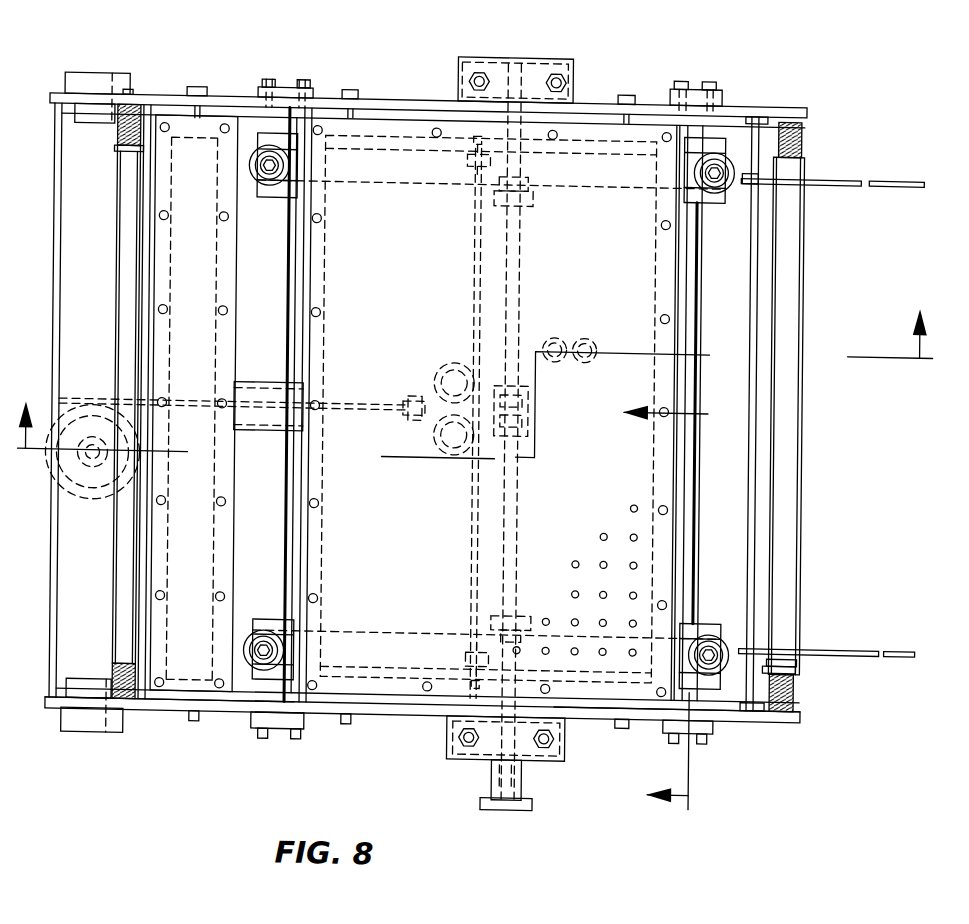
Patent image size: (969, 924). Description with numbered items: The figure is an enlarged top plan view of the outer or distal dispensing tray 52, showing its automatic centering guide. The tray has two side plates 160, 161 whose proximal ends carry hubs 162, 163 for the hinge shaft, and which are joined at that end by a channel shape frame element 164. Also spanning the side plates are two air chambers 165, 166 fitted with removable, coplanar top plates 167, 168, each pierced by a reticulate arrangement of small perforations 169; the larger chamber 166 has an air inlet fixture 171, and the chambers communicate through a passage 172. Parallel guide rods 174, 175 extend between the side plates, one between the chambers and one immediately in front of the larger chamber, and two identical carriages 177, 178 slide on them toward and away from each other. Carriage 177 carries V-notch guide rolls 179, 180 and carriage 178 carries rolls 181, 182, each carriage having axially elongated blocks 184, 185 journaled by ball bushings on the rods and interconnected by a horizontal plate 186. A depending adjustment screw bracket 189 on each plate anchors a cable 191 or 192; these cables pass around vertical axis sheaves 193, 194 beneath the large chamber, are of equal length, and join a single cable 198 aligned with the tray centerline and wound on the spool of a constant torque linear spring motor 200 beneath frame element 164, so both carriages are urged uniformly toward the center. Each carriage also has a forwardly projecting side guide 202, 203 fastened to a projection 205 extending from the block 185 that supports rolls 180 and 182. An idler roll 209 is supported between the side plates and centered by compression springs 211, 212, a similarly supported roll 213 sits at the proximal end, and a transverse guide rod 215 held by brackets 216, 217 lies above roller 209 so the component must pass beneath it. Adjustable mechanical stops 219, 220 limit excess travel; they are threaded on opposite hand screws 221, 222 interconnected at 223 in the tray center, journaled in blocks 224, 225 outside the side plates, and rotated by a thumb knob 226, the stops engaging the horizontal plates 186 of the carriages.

The distal dispensing tray 52 is at (610, 56).
The side plate 160 is at (401, 96).
The side plate 161 is at (398, 709).
The hub 162 is at (126, 72).
The hub 163 is at (101, 732).
The channel shape frame element 164 is at (63, 664).
The chamber 165 is at (221, 710).
The chamber 166 is at (598, 708).
The top plate 167 is at (211, 265).
The top plate 168 is at (663, 262).
The perforations 169 is at (582, 555).
The air inlet fixture 171 is at (579, 330).
The passage 172 is at (263, 427).
The guide rod 174 is at (283, 506).
The guide rod 175 is at (700, 553).
The carriage 177 is at (411, 177).
The carriage 178 is at (424, 625).
The V-notch guide roll 179 is at (250, 161).
The V-notch guide roll 180 is at (695, 163).
The V-notch guide roll 181 is at (249, 644).
The V-notch guide roll 182 is at (725, 618).
The guide block 184 is at (265, 193).
The guide block 185 is at (703, 143).
The horizontal plate 186 is at (359, 178).
The adjustment screw bracket 189 is at (466, 151).
The cable 191 is at (474, 278).
The cable 192 is at (475, 521).
The sheave 193 is at (448, 357).
The sheave 194 is at (443, 425).
The single cable 198 is at (366, 396).
The linear spring motor 200 is at (91, 402).
The side guide 202 is at (896, 164).
The side guide 203 is at (885, 641).
The projection 205 is at (744, 171).
The idler roll 209 is at (800, 397).
The compression spring 211 is at (802, 130).
The compression spring 212 is at (800, 677).
The roll 213 is at (118, 150).
The transverse guide rod 215 is at (758, 314).
The bracket 216 is at (769, 100).
The bracket 217 is at (764, 699).
The mechanical stop 219 is at (537, 196).
The mechanical stop 220 is at (531, 607).
The screw 221 is at (521, 252).
The screw 222 is at (522, 493).
The interconnection 223 is at (533, 402).
The block 224 is at (526, 48).
The block 225 is at (487, 752).
The thumb knob 226 is at (528, 801).